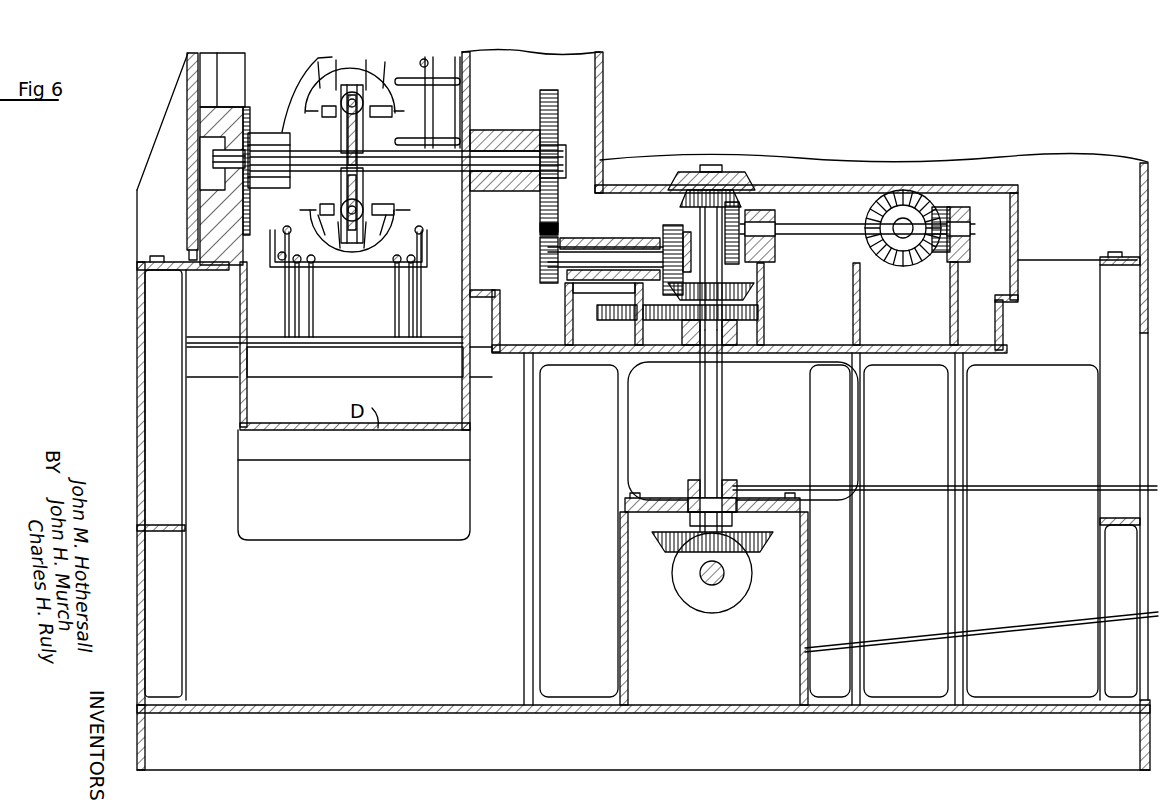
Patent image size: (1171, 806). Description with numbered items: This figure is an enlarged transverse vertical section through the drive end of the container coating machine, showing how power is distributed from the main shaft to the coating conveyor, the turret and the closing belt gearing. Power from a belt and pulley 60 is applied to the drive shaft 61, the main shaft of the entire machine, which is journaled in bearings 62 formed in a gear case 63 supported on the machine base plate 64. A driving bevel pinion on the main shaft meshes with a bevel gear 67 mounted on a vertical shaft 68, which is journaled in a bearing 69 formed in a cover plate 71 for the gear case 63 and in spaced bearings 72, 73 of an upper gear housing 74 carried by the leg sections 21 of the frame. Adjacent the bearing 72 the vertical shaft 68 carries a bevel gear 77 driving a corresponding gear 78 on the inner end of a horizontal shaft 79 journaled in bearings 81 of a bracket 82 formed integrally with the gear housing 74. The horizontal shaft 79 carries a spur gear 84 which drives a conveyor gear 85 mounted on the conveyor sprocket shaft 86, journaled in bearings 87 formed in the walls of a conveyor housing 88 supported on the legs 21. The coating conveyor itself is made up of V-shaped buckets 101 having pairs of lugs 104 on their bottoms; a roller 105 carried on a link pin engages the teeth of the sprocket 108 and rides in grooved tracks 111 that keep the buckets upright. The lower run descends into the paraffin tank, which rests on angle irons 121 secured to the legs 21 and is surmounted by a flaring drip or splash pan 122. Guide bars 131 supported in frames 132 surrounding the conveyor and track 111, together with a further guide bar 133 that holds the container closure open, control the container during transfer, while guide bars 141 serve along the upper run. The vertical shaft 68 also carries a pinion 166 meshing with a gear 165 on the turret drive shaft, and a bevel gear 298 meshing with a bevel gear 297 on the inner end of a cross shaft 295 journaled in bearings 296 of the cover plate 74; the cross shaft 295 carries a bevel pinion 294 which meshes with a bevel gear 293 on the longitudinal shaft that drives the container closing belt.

The leg sections 21 is at (140, 386).
The belt and pulley 60 is at (1005, 487).
The drive shaft 61 is at (717, 580).
The bearings 62 is at (740, 571).
The gear case 63 is at (620, 603).
The machine base plate 64 is at (478, 705).
The bevel gear 67 is at (664, 548).
The vertical shaft 68 is at (712, 430).
The bearing 69 is at (738, 484).
The cover plate 71 is at (657, 500).
The bearing 72 is at (727, 358).
The bearing 73 is at (706, 188).
The upper gear housing 74 is at (900, 354).
The bevel gear 77 is at (768, 296).
The bevel gear 78 is at (684, 232).
The horizontal shaft 79 is at (606, 256).
The bearings 81 is at (575, 240).
The bracket 82 is at (568, 306).
The spur gear 84 is at (545, 262).
The conveyor gear 85 is at (548, 95).
The conveyor sprocket shaft 86 is at (465, 158).
The bearings 87 is at (265, 150).
The conveyor housing 88 is at (470, 58).
The V-shaped buckets 101 is at (340, 80).
The lugs 104 is at (425, 186).
The roller 105 is at (352, 92).
The sprocket 108 is at (343, 148).
The grooved tracks 111 is at (360, 119).
The angle irons 121 is at (212, 380).
The drip or splash pan 122 is at (468, 247).
The guide bars 131 is at (294, 254).
The frames 132 is at (313, 264).
The guide bar 133 is at (280, 258).
The guide bars 141 is at (426, 58).
The gear 165 is at (614, 322).
The pinion 166 is at (733, 325).
The bevel gear 293 is at (912, 193).
The bevel pinion 294 is at (950, 215).
The cross shaft 295 is at (838, 233).
The bearings 296 is at (772, 216).
The bevel gear 297 is at (735, 205).
The bevel gear 298 is at (690, 183).